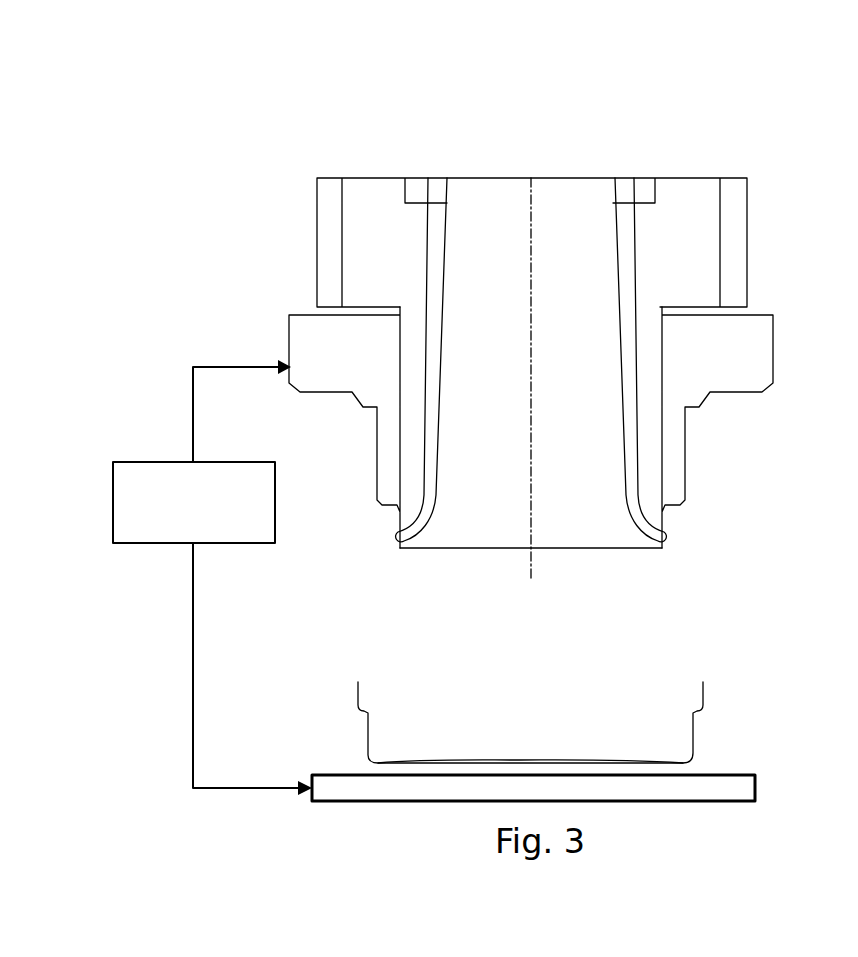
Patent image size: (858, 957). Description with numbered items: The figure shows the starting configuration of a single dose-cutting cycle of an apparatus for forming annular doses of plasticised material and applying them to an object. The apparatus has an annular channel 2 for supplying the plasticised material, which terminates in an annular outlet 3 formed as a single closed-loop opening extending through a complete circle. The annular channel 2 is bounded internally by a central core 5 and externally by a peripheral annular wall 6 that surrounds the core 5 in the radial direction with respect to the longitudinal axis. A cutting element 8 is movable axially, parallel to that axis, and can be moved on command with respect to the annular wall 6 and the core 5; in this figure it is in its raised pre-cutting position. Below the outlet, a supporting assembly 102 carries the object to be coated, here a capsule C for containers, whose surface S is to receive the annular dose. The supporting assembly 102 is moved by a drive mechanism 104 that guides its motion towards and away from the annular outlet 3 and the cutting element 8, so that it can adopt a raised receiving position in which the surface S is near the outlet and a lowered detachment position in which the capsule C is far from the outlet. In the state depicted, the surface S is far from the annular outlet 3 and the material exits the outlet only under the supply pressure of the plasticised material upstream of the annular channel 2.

The annular channel 2 is at (625, 250).
The annular outlet 3 is at (395, 537).
The core 5 is at (579, 200).
The annular wall 6 is at (384, 195).
The cutting element 8 is at (308, 348).
The drive mechanism 104 is at (147, 461).
The supporting assembly 102 is at (345, 787).
The capsule C is at (333, 666).
The surface S is at (548, 760).